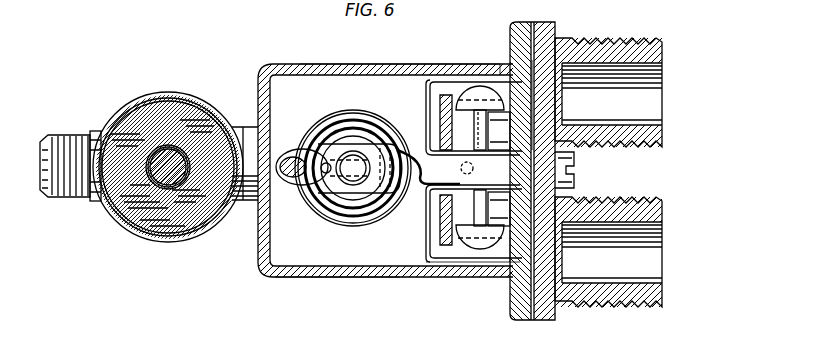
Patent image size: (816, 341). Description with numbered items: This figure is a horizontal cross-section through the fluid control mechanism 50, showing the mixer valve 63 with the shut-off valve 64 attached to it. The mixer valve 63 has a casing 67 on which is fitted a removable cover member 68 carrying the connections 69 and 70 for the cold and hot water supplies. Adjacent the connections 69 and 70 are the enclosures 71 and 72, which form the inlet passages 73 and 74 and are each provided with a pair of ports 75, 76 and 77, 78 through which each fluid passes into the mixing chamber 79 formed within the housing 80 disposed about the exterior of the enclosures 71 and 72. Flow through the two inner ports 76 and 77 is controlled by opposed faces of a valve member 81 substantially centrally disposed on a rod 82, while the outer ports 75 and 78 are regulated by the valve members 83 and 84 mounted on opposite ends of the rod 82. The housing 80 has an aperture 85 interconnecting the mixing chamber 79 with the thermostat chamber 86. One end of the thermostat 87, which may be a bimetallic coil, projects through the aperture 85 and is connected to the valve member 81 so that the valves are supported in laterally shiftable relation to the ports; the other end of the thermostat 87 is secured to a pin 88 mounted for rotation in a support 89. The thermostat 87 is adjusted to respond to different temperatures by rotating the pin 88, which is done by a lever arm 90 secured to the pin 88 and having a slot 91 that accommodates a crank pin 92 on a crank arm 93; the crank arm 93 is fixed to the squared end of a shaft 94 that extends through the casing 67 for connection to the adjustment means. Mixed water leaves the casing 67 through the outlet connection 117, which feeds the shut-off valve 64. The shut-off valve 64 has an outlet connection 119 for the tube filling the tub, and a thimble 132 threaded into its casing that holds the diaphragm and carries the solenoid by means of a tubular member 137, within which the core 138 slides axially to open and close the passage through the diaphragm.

The fluid control mechanism 50 is at (254, 90).
The mixer valve 63 is at (486, 82).
The shut-off valve 64 is at (148, 212).
The casing 67 is at (352, 66).
The cover member 68 is at (556, 32).
The connection 69 is at (610, 40).
The connection 70 is at (604, 200).
The enclosure 71 is at (536, 110).
The enclosure 72 is at (576, 172).
The inlet passage 73 is at (500, 62).
The inlet passage 74 is at (506, 252).
The port 75 is at (432, 97).
The port 76 is at (494, 116).
The port 77 is at (474, 200).
The port 78 is at (440, 242).
The mixing chamber 79 is at (428, 220).
The housing 80 is at (450, 262).
The valve member 81 is at (474, 140).
The rod 82 is at (492, 210).
The valve member 83 is at (470, 68).
The valve member 84 is at (480, 240).
The aperture 85 is at (400, 192).
The thermostat chamber 86 is at (272, 268).
The thermostat 87 is at (374, 128).
The pin 88 is at (355, 186).
The support 89 is at (360, 130).
The lever arm 90 is at (338, 196).
The slot 91 is at (318, 190).
The crank pin 92 is at (325, 162).
The crank arm 93 is at (298, 152).
The shaft 94 is at (288, 180).
The outlet connection 117 is at (246, 138).
The outlet connection 119 is at (70, 146).
The thimble 132 is at (138, 112).
The tubular member 137 is at (186, 185).
The core 138 is at (186, 132).